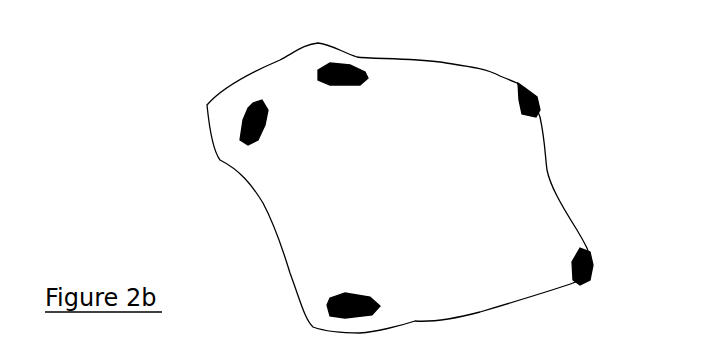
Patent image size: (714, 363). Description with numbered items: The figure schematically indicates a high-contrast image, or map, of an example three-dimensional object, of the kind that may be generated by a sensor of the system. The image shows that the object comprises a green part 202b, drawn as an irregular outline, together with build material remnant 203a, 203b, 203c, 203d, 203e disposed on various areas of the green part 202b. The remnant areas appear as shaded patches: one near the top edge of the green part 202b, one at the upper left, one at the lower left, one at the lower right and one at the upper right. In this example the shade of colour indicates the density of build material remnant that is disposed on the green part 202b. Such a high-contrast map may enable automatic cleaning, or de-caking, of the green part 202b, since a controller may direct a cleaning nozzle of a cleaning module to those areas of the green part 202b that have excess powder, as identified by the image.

The green part 202b is at (440, 135).
The build material remnant 203a is at (352, 65).
The build material remnant 203b is at (246, 120).
The build material remnant 203c is at (327, 302).
The build material remnant 203d is at (593, 263).
The build material remnant 203e is at (538, 97).